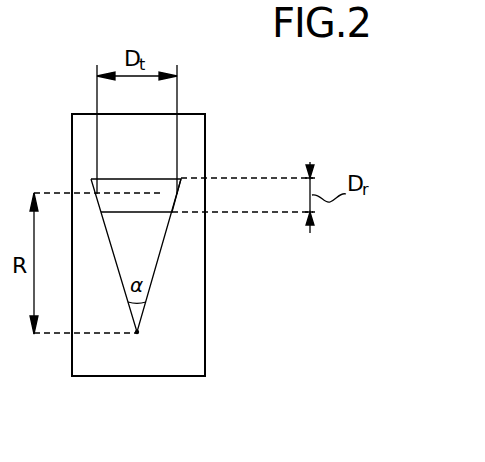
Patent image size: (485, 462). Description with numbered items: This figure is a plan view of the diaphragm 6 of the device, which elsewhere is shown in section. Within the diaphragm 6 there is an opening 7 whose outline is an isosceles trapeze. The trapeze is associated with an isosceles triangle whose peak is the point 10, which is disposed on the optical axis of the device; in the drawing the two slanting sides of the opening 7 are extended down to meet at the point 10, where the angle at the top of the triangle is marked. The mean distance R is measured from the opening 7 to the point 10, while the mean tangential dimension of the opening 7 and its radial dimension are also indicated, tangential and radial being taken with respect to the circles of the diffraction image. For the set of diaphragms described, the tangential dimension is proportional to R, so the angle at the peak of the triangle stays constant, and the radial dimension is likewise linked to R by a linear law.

The diaphragm 6 is at (191, 136).
The opening 7 is at (160, 193).
The point 10 is at (139, 331).